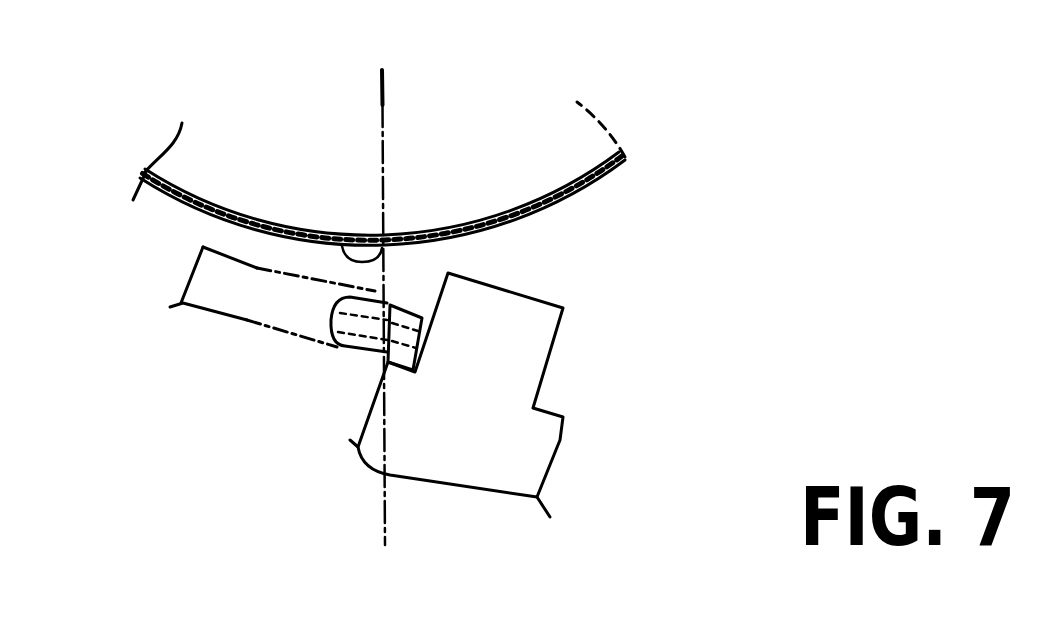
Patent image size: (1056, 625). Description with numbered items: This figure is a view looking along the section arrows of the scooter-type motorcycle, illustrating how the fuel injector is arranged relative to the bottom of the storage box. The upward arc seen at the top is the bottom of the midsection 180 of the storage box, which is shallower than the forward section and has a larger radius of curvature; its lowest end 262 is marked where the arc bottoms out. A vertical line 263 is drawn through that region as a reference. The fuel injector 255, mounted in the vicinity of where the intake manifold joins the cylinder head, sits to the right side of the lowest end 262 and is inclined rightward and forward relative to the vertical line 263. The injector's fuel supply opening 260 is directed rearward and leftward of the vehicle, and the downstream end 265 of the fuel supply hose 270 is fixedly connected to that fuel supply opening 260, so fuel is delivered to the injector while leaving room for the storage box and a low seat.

The midsection 180 is at (200, 202).
The vertical line 263 is at (383, 105).
The lowest end 262 is at (338, 233).
The fuel supply hose 270 is at (190, 312).
The fuel supply opening 260 is at (332, 345).
The downstream end 265 is at (363, 355).
The fuel injector 255 is at (560, 440).